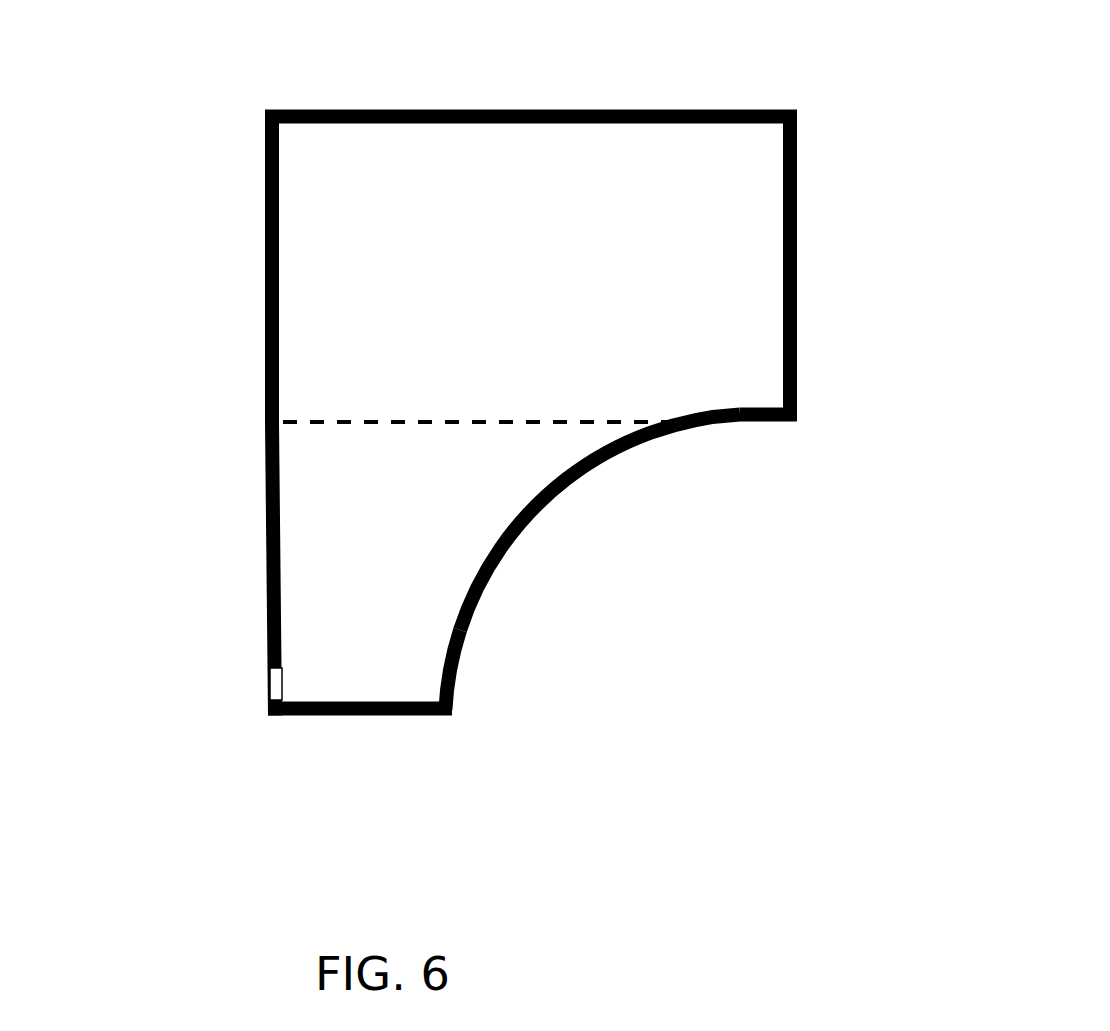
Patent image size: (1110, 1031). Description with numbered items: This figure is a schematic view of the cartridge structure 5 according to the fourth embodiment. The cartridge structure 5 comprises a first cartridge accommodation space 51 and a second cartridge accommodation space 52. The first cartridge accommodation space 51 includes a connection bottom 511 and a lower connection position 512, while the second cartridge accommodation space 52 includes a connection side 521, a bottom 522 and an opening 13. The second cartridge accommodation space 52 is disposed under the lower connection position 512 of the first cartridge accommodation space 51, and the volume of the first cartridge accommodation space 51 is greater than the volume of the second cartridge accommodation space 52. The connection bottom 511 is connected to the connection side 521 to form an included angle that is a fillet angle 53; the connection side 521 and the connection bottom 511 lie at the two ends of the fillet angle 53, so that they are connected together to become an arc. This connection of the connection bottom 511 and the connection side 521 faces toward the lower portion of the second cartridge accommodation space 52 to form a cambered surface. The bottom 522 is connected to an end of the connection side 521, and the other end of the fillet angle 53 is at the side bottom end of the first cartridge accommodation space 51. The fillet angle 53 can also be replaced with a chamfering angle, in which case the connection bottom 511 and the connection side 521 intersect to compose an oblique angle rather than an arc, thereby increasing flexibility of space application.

The cartridge structure 5 is at (556, 70).
The first cartridge accommodation space 51 is at (756, 258).
The connection bottom 511 is at (762, 421).
The lower connection position 512 is at (448, 372).
The second cartridge accommodation space 52 is at (300, 520).
The connection side 521 is at (455, 697).
The bottom 522 is at (362, 717).
The fillet angle 53 is at (585, 527).
The opening 13 is at (270, 685).